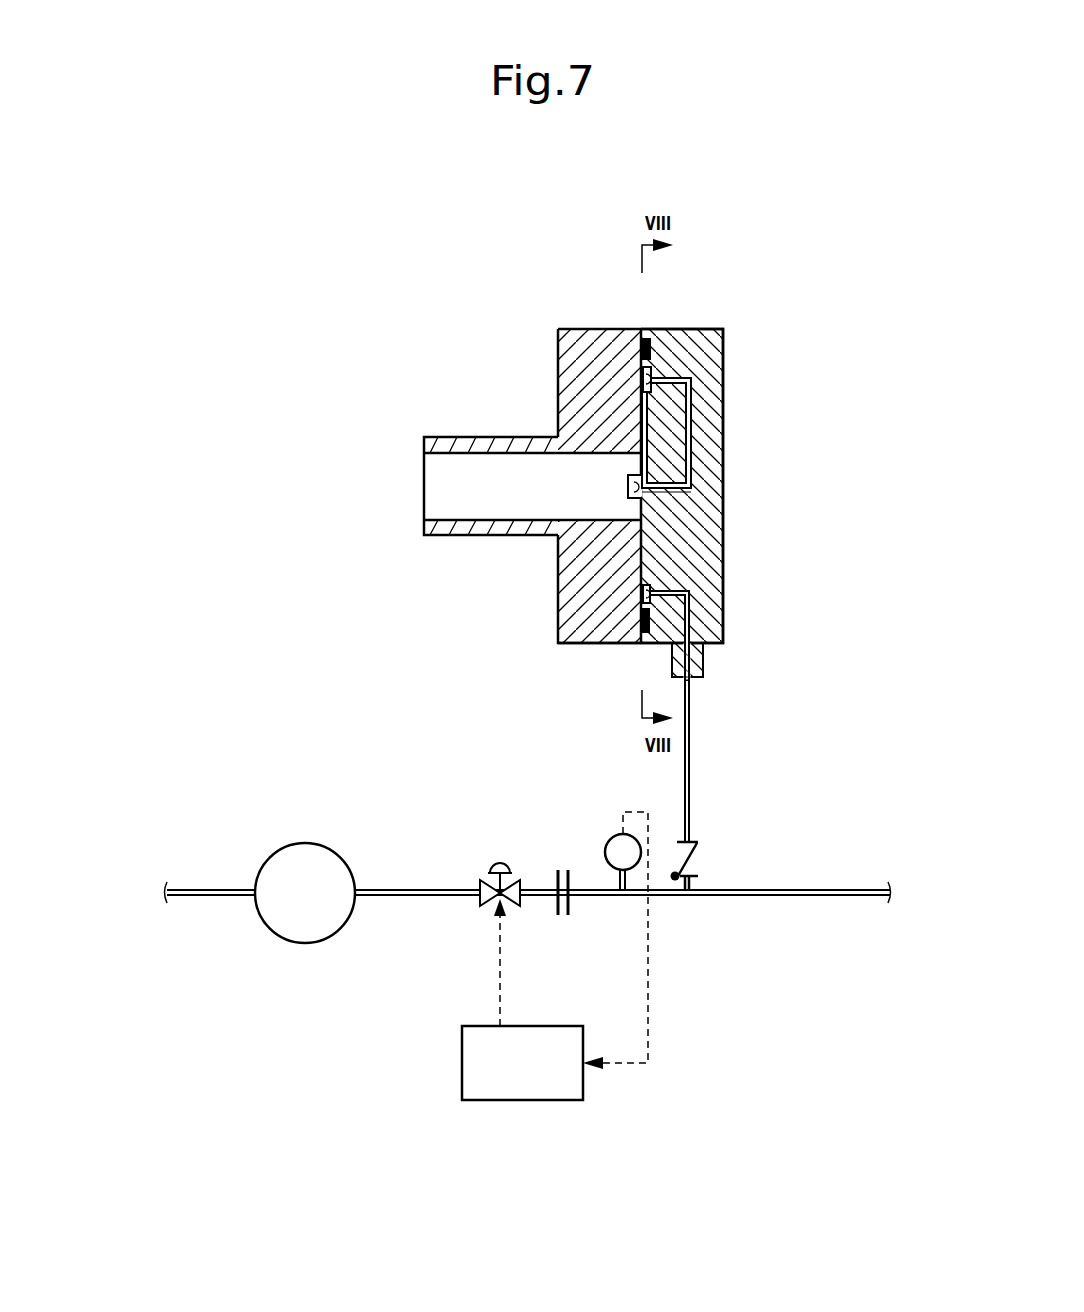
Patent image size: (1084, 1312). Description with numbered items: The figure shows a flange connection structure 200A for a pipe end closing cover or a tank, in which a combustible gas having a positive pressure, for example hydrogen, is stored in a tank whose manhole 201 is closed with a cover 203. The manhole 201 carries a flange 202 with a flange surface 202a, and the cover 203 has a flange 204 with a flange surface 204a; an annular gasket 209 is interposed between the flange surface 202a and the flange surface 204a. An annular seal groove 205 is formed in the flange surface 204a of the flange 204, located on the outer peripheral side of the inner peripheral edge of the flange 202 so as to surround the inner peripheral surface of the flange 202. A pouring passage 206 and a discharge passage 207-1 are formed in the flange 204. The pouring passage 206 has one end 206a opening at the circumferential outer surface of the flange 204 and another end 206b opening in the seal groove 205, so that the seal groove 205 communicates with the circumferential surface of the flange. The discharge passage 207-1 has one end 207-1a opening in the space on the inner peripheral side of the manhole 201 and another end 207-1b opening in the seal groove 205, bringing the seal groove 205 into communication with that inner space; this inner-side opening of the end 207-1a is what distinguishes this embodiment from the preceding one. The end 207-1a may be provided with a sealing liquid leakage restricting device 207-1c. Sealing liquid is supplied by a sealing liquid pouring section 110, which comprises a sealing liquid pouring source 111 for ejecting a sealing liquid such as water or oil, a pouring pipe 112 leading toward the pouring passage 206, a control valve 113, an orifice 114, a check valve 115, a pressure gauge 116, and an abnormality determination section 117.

The flange connection structure 200A is at (313, 290).
The manhole 201 is at (445, 535).
The flange 202 is at (560, 622).
The flange surface 202a is at (640, 445).
The cover 203 is at (715, 462).
The flange 204 is at (705, 595).
The flange surface 204a is at (718, 540).
The annular seal groove 205 is at (645, 383).
The pouring passage 206 is at (695, 625).
The one end of pouring passage 206a is at (697, 678).
The other end of pouring passage 206b is at (650, 588).
The discharge passage 207-1 is at (692, 405).
The one end of discharge passage 207-1a is at (623, 520).
The other end of discharge passage 207-1b is at (648, 372).
The sealing liquid leakage restricting device 207-1c is at (648, 486).
The annular gasket 209 is at (640, 348).
The sealing liquid pouring section 110 is at (280, 993).
The sealing liquid pouring source 111 is at (293, 860).
The pouring pipe 112 is at (690, 780).
The control valve 113 is at (480, 905).
The orifice 114 is at (562, 917).
The check valve 115 is at (700, 868).
The pressure gauge 116 is at (607, 840).
The abnormality determination section 117 is at (500, 1100).